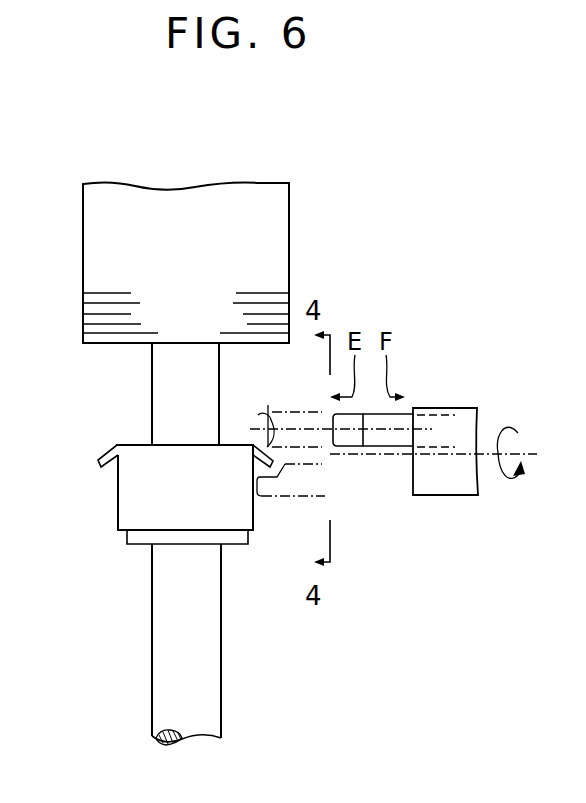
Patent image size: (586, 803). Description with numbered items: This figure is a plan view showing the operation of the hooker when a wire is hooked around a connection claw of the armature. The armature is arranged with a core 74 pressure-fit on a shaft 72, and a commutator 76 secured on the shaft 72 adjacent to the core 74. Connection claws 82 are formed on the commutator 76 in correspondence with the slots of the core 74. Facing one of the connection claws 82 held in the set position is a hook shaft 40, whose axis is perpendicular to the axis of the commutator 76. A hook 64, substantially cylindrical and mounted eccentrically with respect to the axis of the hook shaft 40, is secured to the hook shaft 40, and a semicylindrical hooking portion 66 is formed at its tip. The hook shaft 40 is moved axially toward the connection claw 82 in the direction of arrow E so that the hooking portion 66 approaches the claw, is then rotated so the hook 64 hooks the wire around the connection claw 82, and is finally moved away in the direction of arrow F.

The core 74 is at (290, 229).
The shaft 72 is at (152, 392).
The commutator 76 is at (120, 505).
The connection claw 82 is at (98, 462).
The hooking portion 66 is at (333, 416).
The hook 64 is at (383, 447).
The hook shaft 40 is at (433, 497).